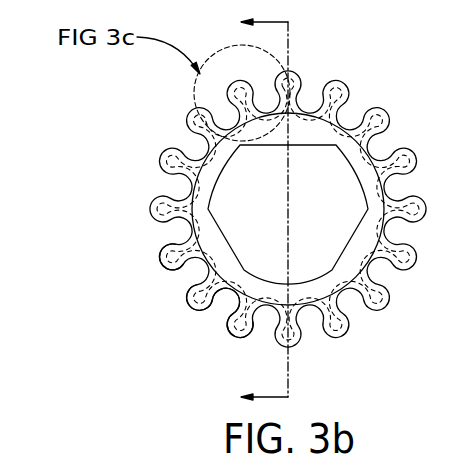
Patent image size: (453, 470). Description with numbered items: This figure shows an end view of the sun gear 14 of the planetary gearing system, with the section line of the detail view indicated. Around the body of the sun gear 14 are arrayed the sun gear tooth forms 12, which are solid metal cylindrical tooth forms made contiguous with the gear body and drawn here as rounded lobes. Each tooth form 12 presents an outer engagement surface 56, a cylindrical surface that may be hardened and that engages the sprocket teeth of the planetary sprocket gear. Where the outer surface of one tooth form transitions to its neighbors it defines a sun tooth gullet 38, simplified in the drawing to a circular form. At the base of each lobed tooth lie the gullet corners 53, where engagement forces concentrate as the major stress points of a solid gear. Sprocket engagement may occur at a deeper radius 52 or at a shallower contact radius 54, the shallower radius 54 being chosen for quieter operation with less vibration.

The sun gear tooth form 12 is at (158, 158).
The sun gear 14 is at (362, 98).
The sun tooth gullet 38 is at (164, 183).
The outer engagement surface 56 is at (156, 248).
The gullet corner 53 is at (188, 286).
The deeper contact radius 52 is at (215, 302).
The shallower contact radius 54 is at (252, 340).